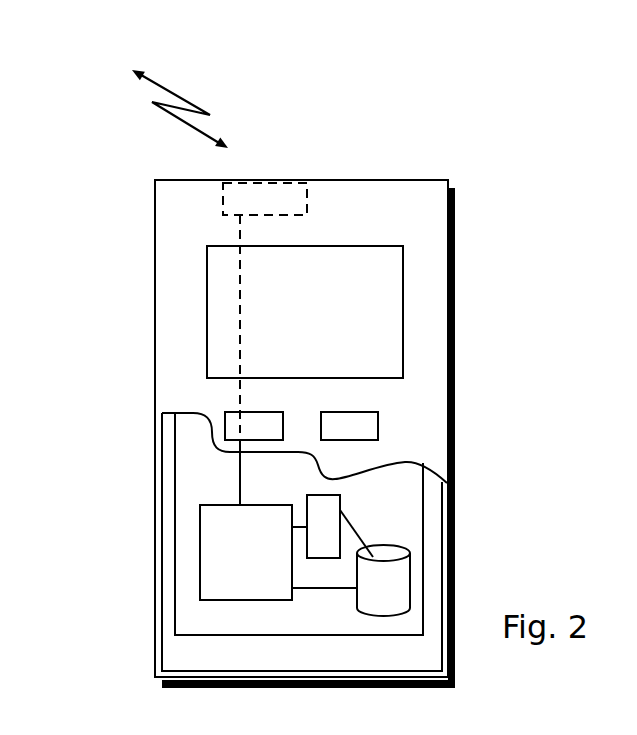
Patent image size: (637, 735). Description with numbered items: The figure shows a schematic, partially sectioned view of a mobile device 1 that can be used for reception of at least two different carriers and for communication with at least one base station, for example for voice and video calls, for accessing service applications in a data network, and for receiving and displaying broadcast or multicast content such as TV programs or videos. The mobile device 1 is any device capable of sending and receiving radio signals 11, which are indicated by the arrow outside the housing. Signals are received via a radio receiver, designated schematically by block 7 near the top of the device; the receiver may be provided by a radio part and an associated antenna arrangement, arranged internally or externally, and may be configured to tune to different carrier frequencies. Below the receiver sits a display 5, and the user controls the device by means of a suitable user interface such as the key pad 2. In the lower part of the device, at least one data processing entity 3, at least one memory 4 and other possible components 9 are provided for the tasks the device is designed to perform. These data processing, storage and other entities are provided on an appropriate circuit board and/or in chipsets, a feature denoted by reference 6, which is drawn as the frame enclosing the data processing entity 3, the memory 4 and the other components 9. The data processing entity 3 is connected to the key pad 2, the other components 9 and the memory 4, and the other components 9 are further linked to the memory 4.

The mobile device 1 is at (157, 222).
The key pad 2 is at (232, 426).
The data processing entity 3 is at (207, 537).
The memory 4 is at (378, 592).
The display 5 is at (223, 298).
The circuit board 6 is at (200, 618).
The radio receiver 7 is at (250, 198).
The other components 9 is at (323, 510).
The radio signals 11 is at (192, 65).